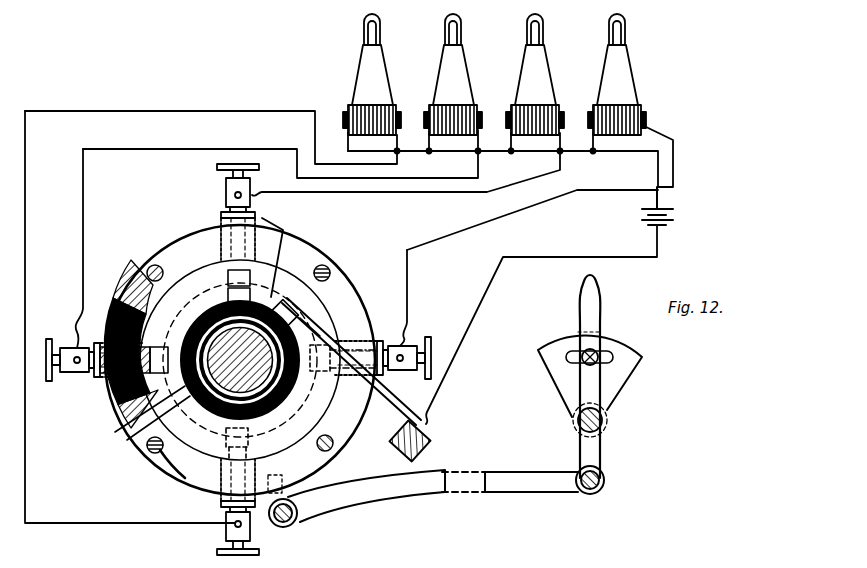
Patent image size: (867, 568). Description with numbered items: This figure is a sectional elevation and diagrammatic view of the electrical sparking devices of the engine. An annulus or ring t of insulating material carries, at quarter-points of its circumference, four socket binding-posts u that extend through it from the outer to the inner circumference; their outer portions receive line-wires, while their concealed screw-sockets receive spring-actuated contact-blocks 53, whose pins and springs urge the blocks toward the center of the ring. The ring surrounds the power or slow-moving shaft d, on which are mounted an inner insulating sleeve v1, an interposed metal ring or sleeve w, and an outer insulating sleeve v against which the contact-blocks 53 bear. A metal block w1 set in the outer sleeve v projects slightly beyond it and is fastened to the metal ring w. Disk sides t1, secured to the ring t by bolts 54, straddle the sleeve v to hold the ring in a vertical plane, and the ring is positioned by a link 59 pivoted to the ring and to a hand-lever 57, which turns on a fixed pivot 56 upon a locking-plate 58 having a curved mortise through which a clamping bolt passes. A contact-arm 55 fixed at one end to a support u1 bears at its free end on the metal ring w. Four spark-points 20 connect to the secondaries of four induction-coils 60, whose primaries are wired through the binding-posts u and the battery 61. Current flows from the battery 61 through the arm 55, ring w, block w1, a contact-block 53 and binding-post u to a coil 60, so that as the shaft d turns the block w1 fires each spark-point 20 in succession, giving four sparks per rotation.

The spark-points 20 is at (494, 74).
The induction-coils 60 is at (553, 388).
The battery 61 is at (674, 206).
The annulus or ring t is at (156, 256).
The disk sides t1 is at (170, 462).
The bolts 54 is at (148, 273).
The spring-actuated contact-blocks 53 is at (230, 290).
The power or slow-moving shaft d is at (220, 406).
The metal ring or sleeve w is at (268, 398).
The metal block w1 is at (248, 292).
The contact-arm 55 is at (313, 332).
The outer sleeve v is at (122, 410).
The inner sleeve v1 is at (182, 400).
The socket binding-posts u is at (257, 221).
The fixed support u1 is at (395, 444).
The hand-lever 57 is at (595, 327).
The locking-plate 58 is at (615, 375).
The fixed pivot 56 is at (602, 424).
The link 59 is at (530, 488).